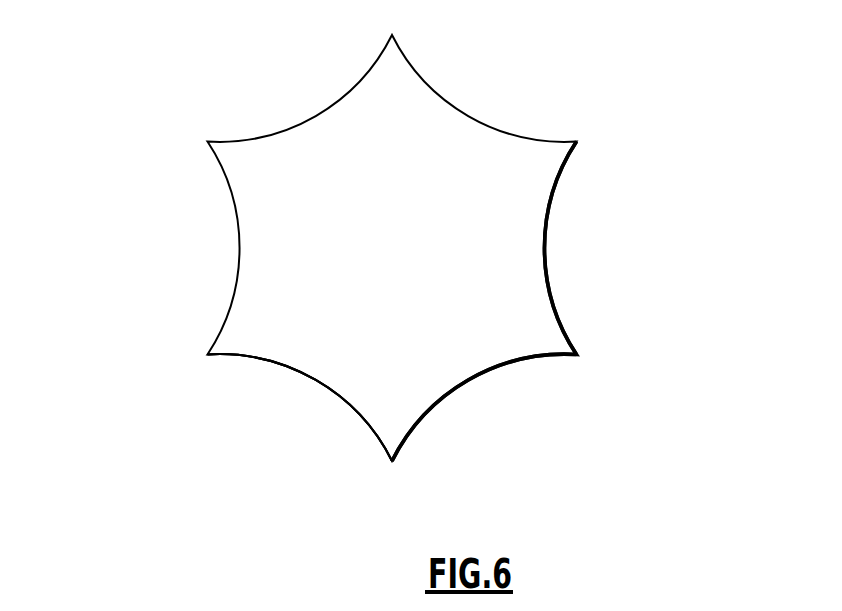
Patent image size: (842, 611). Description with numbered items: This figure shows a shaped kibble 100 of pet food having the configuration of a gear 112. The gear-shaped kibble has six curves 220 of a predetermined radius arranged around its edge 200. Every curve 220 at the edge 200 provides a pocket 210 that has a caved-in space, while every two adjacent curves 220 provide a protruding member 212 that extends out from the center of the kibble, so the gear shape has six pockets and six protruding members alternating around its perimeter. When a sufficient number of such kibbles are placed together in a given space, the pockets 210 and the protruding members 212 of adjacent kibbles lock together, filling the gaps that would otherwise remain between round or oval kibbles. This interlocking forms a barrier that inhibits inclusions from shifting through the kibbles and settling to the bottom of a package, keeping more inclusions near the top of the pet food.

The shaped kibble 100 is at (136, 346).
The gear 112 is at (352, 519).
The edge 200 is at (563, 330).
The pocket 210 is at (642, 266).
The protruding member 212 is at (394, 462).
The curve 220 is at (561, 170).